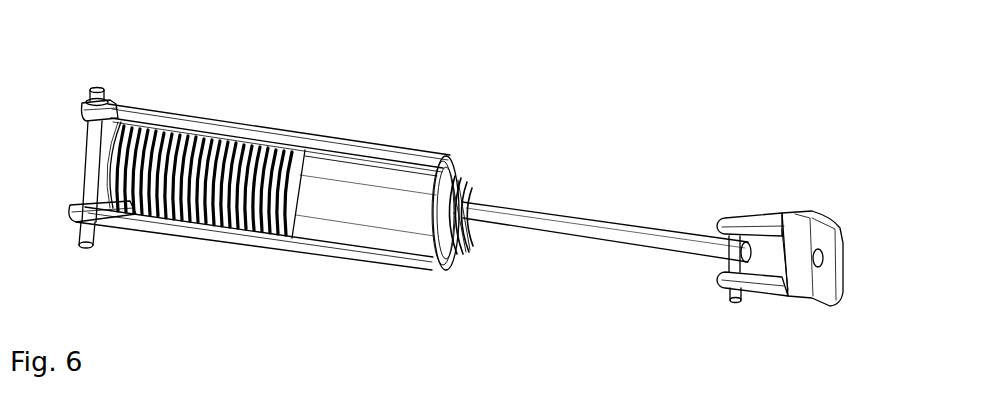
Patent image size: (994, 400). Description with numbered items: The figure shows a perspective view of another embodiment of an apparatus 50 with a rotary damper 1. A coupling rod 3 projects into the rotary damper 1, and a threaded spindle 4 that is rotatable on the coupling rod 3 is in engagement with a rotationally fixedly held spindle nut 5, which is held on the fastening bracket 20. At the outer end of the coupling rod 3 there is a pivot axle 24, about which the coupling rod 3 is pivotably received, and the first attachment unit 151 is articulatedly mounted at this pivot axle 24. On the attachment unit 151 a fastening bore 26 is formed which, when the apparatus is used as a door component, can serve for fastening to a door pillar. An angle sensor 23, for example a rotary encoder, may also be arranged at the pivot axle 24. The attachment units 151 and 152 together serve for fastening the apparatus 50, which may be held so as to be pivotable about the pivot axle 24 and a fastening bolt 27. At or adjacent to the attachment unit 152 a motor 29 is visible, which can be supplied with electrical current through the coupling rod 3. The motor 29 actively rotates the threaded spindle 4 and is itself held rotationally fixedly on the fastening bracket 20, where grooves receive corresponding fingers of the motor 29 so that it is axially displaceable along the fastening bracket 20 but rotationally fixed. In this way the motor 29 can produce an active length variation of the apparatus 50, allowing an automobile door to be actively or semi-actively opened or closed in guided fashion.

The rotary damper 1 is at (328, 108).
The coupling rod 3 is at (582, 224).
The threaded spindle 4 is at (181, 150).
The spindle nut 5 is at (340, 184).
The fastening bracket 20 is at (174, 122).
The angle sensor 23 is at (727, 298).
The pivot axle 24 is at (740, 215).
The fastening bore 26 is at (813, 260).
The fastening bolt 27 is at (99, 88).
The motor 29 is at (117, 150).
The apparatus 50 is at (688, 77).
The first attachment unit 151 is at (762, 180).
The attachment unit 152 is at (122, 78).